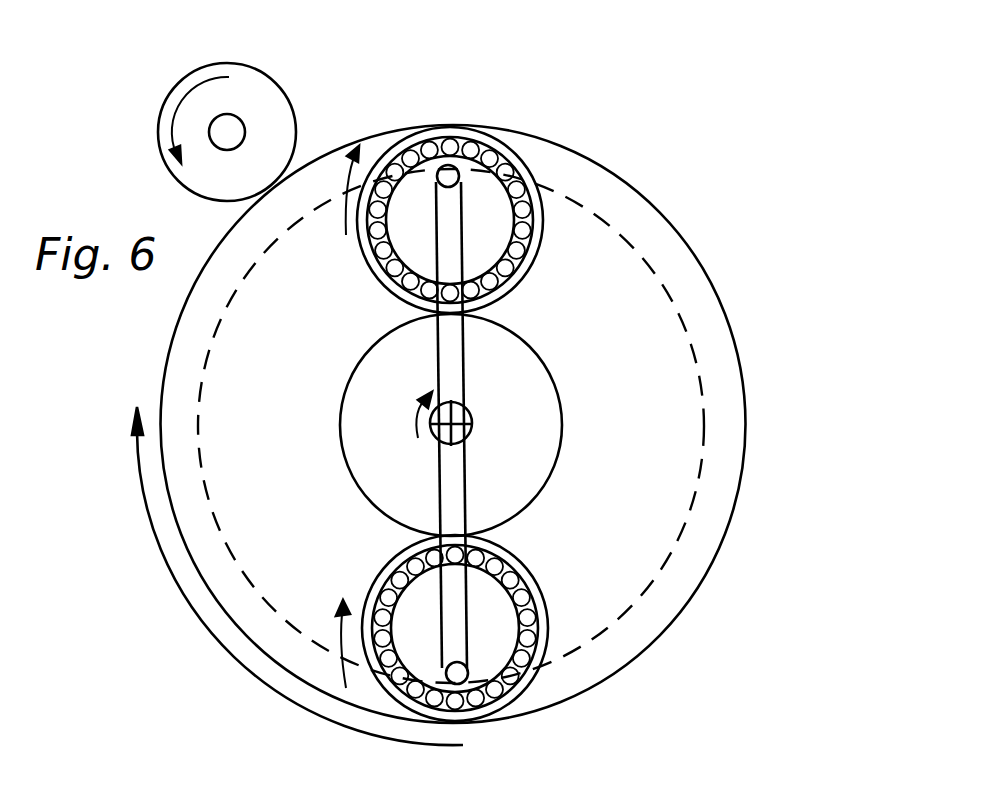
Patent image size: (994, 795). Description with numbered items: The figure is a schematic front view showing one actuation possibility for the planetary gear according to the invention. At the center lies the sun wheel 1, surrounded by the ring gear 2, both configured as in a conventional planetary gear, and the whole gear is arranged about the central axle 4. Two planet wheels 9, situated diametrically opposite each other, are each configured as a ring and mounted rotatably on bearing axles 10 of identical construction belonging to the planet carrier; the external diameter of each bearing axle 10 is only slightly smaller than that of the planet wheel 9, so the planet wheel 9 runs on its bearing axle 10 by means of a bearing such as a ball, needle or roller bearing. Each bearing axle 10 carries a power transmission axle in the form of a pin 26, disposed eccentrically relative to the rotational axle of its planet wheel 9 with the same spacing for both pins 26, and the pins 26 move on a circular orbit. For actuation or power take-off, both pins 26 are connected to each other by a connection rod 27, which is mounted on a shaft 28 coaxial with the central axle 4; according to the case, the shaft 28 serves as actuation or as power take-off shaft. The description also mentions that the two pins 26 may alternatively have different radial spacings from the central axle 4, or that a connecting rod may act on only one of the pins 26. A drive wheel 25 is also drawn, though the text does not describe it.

The sun wheel 1 is at (498, 378).
The ring gear 2 is at (650, 197).
The central axle 4 is at (473, 424).
The planet wheel 9 is at (405, 143).
The bearing axle 10 is at (483, 235).
The drive wheel 25 is at (252, 102).
The pin 26 is at (457, 174).
The connection rod 27 is at (455, 482).
The shaft 28 is at (437, 447).